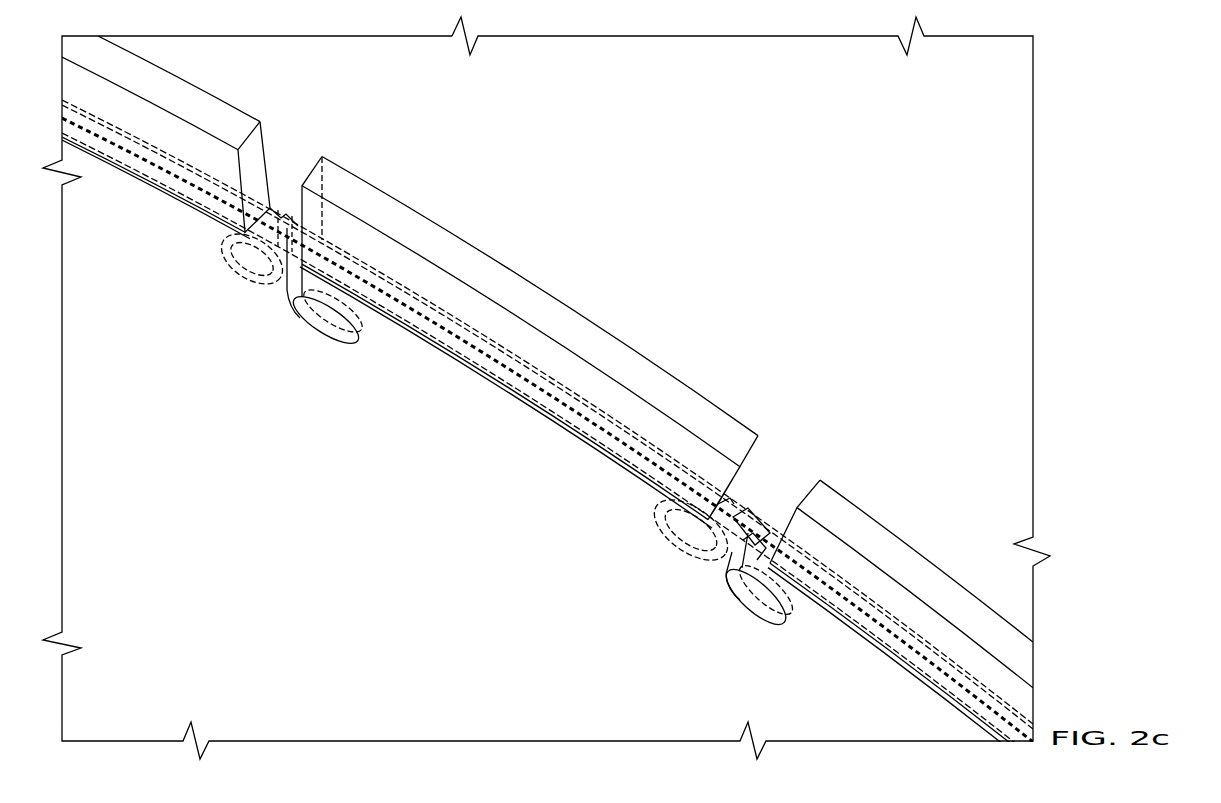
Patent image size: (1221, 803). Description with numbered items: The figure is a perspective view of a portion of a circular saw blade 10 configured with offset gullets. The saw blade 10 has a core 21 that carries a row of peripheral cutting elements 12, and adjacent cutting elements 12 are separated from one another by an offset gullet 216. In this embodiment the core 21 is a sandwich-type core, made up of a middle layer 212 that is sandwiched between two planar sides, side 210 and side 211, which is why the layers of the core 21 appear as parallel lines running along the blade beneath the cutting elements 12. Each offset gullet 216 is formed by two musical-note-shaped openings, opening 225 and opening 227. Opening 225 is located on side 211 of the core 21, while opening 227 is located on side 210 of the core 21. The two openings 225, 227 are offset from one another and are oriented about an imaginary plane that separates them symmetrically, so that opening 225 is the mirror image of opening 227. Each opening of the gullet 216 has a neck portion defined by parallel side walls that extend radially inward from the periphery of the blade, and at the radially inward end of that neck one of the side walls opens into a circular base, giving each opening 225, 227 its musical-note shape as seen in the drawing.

The circular saw blade 10 is at (701, 167).
The cutting element 12 is at (928, 526).
The core 21 is at (316, 621).
The side 210 is at (742, 537).
The side 211 is at (742, 540).
The middle layer 212 is at (757, 545).
The offset gullet 216 is at (333, 355).
The opening 225 is at (733, 515).
The opening 227 is at (343, 342).